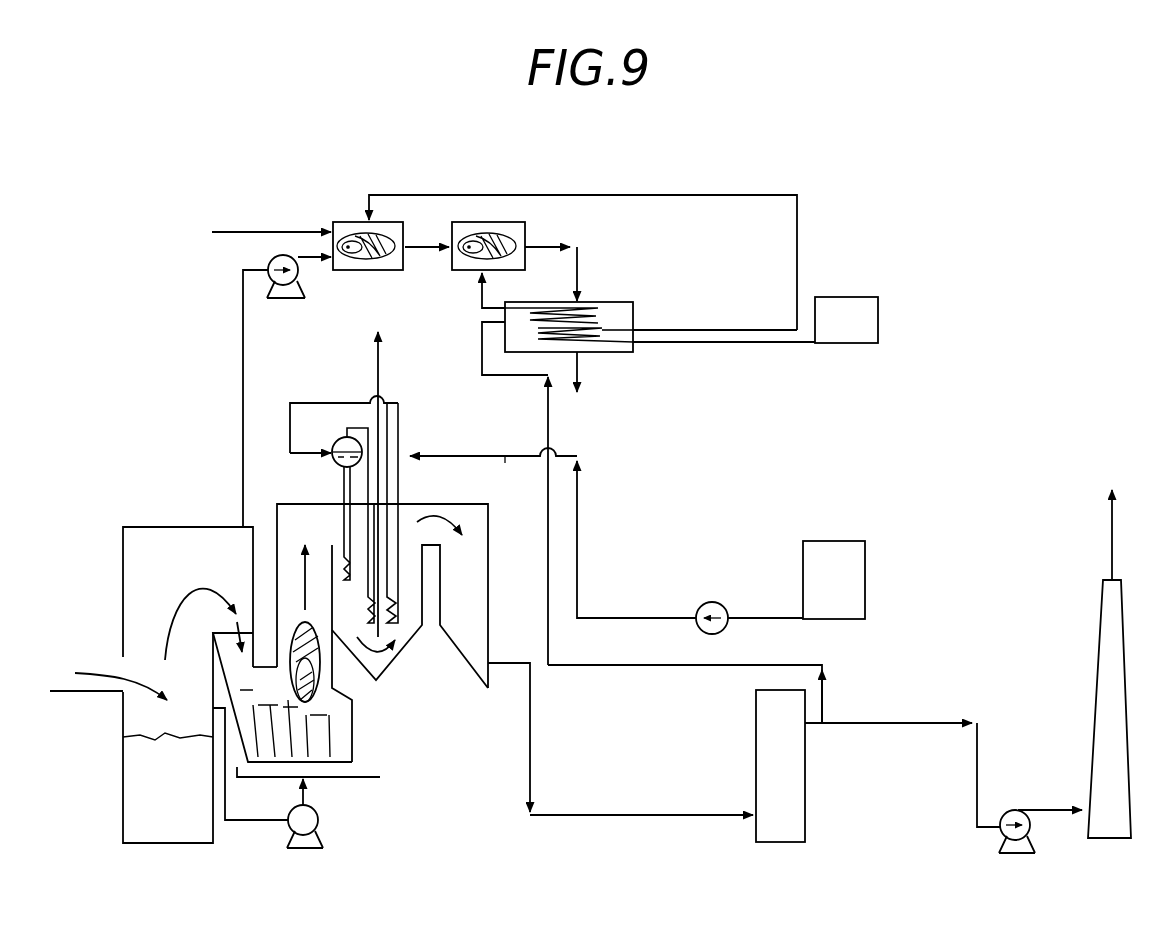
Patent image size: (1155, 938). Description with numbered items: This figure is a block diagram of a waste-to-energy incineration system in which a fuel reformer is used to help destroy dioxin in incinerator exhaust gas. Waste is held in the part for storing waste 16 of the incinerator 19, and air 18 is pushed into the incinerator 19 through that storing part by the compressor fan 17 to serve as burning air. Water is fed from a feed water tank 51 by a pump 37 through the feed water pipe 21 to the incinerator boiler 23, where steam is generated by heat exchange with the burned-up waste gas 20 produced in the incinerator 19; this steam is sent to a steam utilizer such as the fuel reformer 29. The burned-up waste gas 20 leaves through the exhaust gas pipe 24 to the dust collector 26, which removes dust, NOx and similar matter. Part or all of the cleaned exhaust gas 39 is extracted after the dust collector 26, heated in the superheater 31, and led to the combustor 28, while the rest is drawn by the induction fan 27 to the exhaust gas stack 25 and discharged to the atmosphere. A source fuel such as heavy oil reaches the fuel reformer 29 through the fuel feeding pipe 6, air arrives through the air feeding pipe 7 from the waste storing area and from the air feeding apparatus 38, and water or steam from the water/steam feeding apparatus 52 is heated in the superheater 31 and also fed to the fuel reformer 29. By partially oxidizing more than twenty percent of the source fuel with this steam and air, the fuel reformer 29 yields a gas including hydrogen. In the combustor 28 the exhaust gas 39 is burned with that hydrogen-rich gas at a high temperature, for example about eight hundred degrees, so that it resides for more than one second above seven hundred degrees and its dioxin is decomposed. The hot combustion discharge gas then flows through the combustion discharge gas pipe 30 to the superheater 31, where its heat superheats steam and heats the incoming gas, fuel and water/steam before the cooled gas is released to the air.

The fuel feeding pipe 6 is at (288, 232).
The air feeding pipe 7 is at (240, 372).
The part for storing waste 16 is at (92, 672).
The compressor fan 17 is at (318, 824).
The air 18 is at (308, 787).
The incinerator 19 is at (353, 723).
The burned-up waste gas 20 is at (297, 534).
The feed water pipe 21 is at (580, 556).
The incinerator boiler 23 is at (346, 487).
The exhaust gas pipe 24 is at (655, 815).
The exhaust gas stack 25 is at (1100, 690).
The dust collector 26 is at (806, 823).
The induction fan 27 is at (1034, 830).
The combustor 28 is at (502, 220).
The fuel reformer 29 is at (342, 220).
The combustion discharge gas pipe 30 is at (540, 247).
The superheater 31 is at (603, 301).
The pump 37 is at (718, 602).
The air feeding apparatus 38 is at (300, 282).
The exhaust gas 39 is at (547, 435).
The feed water tank 51 is at (866, 566).
The water/steam feeding apparatus 52 is at (880, 327).